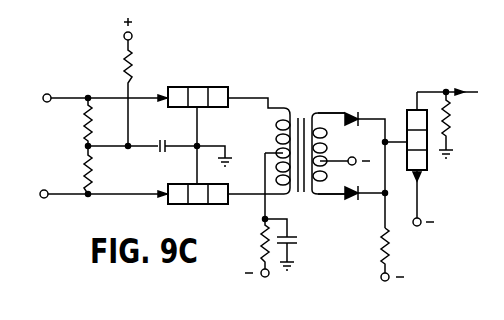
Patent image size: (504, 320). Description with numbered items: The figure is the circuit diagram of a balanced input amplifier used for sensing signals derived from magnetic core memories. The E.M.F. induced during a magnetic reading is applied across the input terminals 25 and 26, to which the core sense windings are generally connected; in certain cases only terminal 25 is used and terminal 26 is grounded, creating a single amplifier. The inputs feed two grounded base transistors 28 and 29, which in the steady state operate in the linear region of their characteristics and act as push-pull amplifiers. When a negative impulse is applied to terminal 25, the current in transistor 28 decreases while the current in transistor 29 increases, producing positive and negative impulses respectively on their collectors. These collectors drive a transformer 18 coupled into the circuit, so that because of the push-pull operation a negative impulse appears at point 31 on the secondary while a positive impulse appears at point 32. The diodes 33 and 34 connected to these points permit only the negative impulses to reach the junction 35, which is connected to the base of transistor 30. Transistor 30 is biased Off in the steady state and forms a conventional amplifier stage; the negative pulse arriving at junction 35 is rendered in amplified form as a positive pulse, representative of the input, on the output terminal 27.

The input terminal 25 is at (44, 94).
The input terminal 26 is at (40, 197).
The output terminal 27 is at (460, 90).
The grounded base transistor 28 is at (200, 87).
The grounded base transistor 29 is at (200, 204).
The transistor 30 is at (427, 168).
The transformer 18 is at (302, 112).
The point 31 is at (328, 113).
The point 32 is at (334, 196).
The diode 33 is at (352, 112).
The diode 34 is at (352, 200).
The junction 35 is at (385, 142).